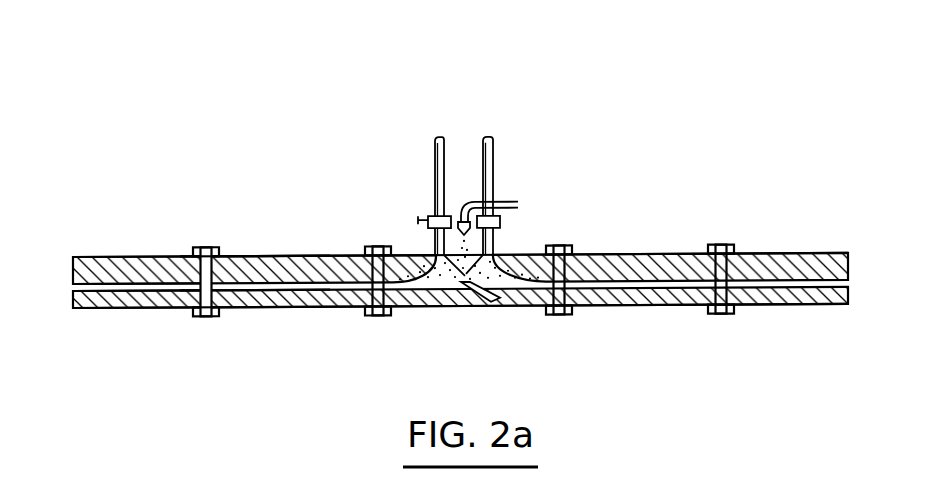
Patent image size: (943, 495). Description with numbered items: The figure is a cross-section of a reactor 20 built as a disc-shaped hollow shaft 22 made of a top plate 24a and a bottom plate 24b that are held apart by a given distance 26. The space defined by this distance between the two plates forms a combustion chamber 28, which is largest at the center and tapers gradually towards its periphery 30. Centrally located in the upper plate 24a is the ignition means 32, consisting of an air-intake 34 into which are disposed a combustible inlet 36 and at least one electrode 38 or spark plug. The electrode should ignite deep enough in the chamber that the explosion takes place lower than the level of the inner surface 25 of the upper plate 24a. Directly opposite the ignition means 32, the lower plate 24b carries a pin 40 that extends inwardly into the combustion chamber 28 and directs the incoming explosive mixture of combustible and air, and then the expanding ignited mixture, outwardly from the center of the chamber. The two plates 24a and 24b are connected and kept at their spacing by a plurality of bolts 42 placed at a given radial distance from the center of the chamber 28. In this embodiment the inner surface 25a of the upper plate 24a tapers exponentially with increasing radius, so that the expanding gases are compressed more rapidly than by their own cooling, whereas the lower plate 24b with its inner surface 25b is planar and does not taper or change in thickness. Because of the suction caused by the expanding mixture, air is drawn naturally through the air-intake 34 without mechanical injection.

The reactor 20 is at (622, 106).
The disc-shaped hollow shaft 22 is at (300, 254).
The top plate 24a is at (640, 262).
The bottom plate 24b is at (697, 306).
The inner surface of the upper plate 25 is at (418, 224).
The inner surface of the upper plate 25a is at (248, 256).
The inner surface of the lower plate 25b is at (292, 300).
The distance 26 is at (760, 306).
The combustion chamber 28 is at (495, 300).
The periphery 30 is at (73, 288).
The ignition means 32 is at (402, 188).
The air-intake 34 is at (461, 150).
The combustible inlet 36 is at (518, 207).
The electrode 38 is at (503, 222).
The pin 40 is at (468, 308).
The bolts 42 is at (207, 320).